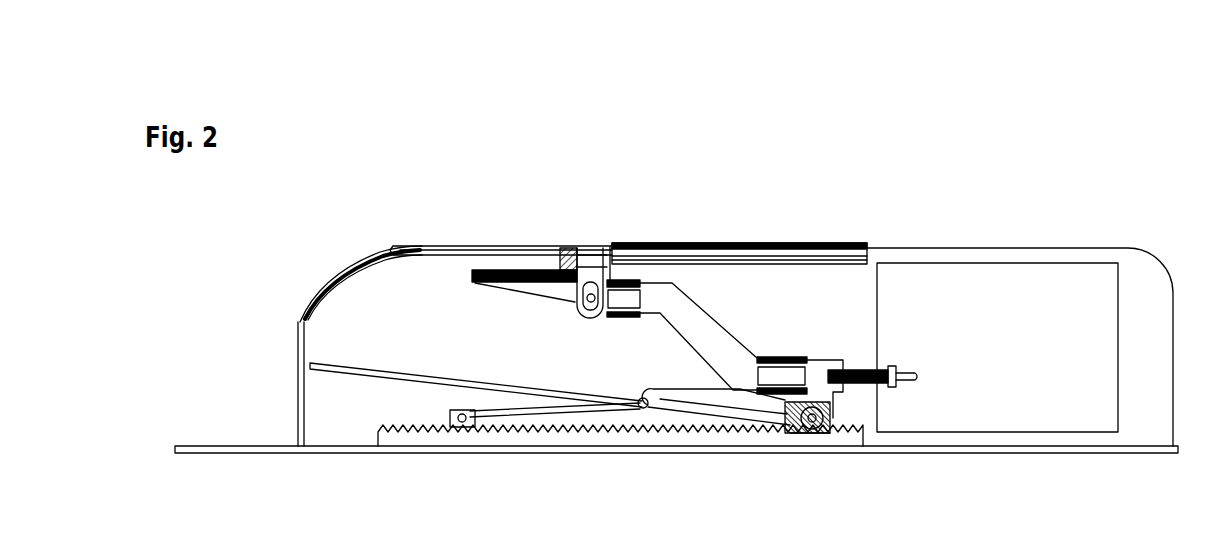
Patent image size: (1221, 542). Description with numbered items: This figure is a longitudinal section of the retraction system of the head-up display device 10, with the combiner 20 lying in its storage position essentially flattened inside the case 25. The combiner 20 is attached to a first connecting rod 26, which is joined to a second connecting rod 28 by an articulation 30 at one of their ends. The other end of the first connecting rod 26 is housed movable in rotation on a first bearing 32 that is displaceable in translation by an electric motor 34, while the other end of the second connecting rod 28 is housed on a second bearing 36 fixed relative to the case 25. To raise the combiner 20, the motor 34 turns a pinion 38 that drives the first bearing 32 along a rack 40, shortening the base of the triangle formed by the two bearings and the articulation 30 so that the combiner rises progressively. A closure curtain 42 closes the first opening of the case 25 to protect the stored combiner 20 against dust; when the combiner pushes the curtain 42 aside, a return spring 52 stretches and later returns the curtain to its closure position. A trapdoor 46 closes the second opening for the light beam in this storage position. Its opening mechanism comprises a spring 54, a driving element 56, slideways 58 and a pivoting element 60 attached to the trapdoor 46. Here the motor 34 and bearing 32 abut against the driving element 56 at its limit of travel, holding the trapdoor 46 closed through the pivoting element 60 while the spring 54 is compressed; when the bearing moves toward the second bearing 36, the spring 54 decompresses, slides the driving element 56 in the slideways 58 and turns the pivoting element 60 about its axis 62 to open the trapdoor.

The head-up display device 10 is at (1020, 178).
The combiner 20 is at (371, 377).
The case 25 is at (1060, 248).
The first connecting rod 26 is at (730, 412).
The second connecting rod 28 is at (550, 410).
The articulation 30 is at (640, 407).
The first bearing 32 is at (820, 456).
The electric motor 34 is at (823, 423).
The second bearing 36 is at (461, 426).
The pinion 38 is at (810, 428).
The rack 40 is at (650, 430).
The closure curtain 42 is at (308, 290).
The trapdoor 46 is at (803, 242).
The return spring 52 is at (473, 282).
The spring 54 is at (863, 371).
The driving element 56 is at (712, 345).
The slideways 58 is at (772, 358).
The pivoting element 60 is at (487, 272).
The axis 62 is at (558, 250).